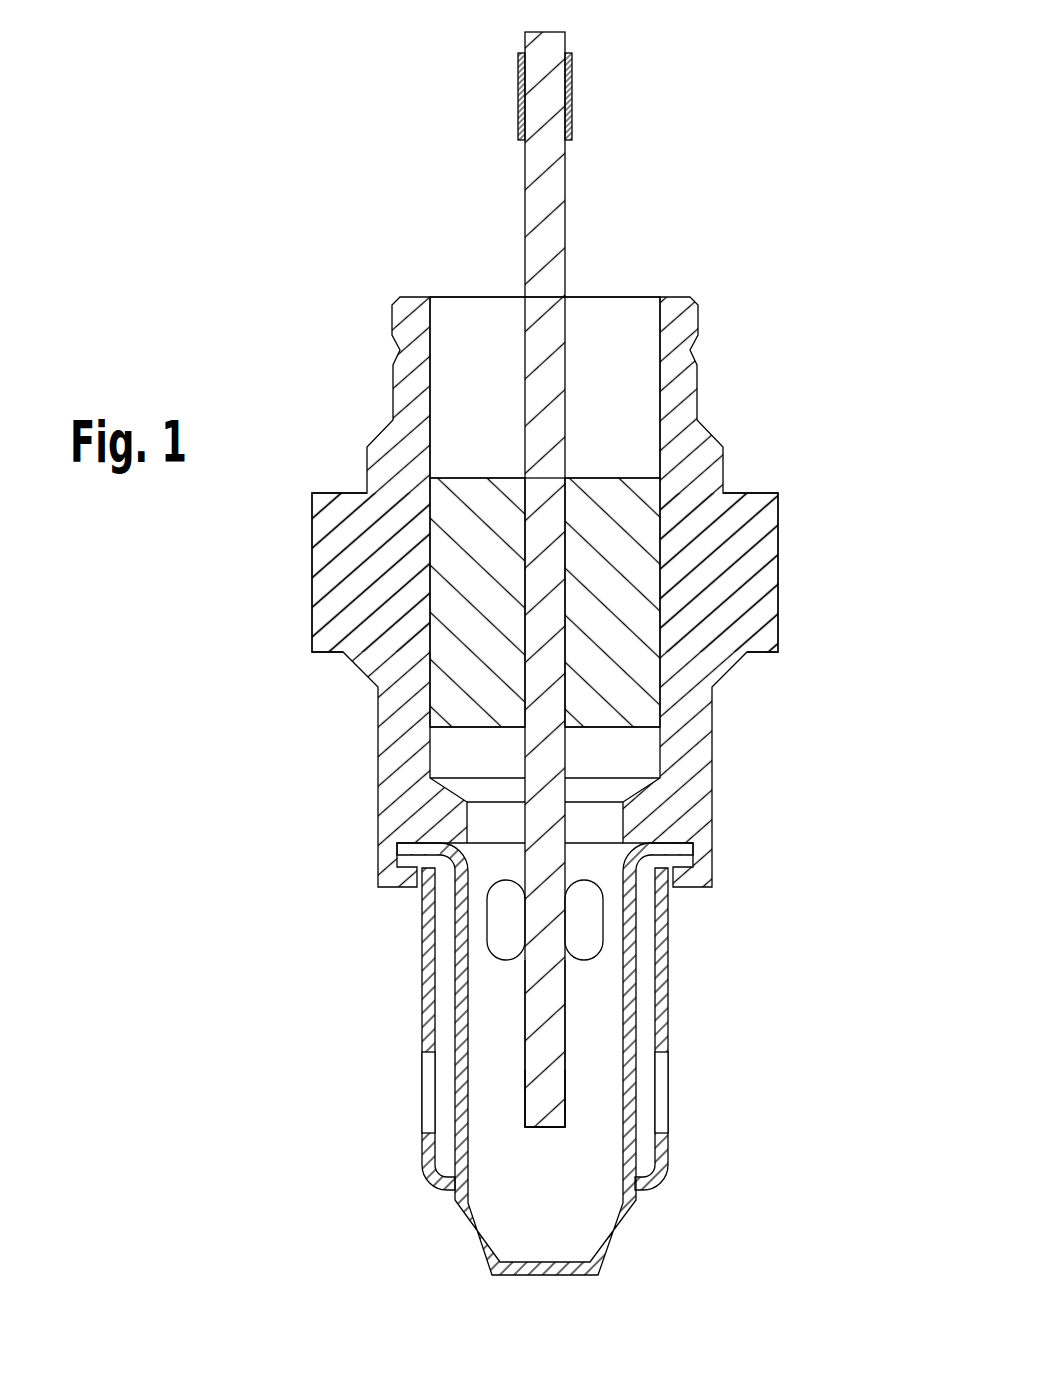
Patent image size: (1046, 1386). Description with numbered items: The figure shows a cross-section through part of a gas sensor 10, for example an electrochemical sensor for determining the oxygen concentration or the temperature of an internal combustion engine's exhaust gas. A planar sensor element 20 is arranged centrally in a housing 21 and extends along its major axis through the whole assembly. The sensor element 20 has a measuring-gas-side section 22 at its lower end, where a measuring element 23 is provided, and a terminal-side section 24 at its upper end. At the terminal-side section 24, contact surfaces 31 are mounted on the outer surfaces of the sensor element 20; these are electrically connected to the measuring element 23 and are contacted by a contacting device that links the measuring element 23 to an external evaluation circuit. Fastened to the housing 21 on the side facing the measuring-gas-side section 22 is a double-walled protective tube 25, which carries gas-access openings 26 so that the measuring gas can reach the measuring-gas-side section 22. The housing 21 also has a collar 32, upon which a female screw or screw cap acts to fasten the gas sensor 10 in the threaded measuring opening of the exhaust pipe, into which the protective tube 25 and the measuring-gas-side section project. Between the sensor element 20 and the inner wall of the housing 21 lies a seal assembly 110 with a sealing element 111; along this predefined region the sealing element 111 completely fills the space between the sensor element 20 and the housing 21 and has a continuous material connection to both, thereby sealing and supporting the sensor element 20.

The gas sensor 10 is at (243, 163).
The planar sensor element 20 is at (545, 757).
The housing 21 is at (690, 718).
The measuring-gas-side section 22 is at (550, 1093).
The measuring element 23 is at (552, 1032).
The terminal-side section 24 is at (547, 53).
The protective tube 25 is at (662, 1007).
The gas-access openings 26 is at (585, 948).
The contact surfaces 31 is at (523, 110).
The collar 32 is at (763, 522).
The seal assembly 110 is at (487, 450).
The sealing element 111 is at (612, 530).